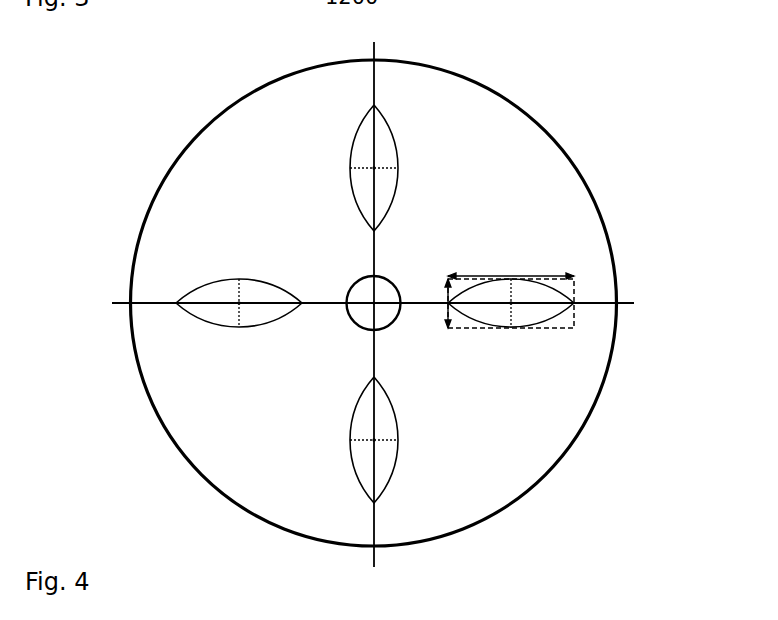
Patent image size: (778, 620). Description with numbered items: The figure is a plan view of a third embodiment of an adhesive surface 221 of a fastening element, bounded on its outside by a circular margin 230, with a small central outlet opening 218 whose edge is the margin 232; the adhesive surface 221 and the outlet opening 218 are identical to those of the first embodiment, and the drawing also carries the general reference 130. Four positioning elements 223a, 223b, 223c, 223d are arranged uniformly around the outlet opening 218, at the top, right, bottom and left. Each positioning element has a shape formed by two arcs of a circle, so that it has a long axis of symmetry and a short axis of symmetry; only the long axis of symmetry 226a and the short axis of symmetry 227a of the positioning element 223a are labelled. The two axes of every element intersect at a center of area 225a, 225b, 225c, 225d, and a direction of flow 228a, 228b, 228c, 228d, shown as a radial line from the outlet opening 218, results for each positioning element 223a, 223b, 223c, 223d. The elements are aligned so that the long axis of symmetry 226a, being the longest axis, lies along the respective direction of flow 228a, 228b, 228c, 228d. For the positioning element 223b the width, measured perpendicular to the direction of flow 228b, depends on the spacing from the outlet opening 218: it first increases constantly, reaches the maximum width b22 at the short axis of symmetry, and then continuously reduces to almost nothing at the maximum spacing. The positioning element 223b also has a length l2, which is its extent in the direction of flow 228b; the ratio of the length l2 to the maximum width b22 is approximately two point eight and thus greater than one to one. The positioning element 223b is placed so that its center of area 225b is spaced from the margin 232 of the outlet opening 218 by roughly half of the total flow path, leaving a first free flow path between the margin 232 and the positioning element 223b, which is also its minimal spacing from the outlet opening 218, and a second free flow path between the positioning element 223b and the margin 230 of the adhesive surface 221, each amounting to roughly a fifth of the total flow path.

The optical device 130 is at (557, 73).
The outlet opening 218 is at (363, 320).
The adhesive surface 221 is at (222, 171).
The positioning element 223a is at (365, 128).
The positioning element 223b is at (547, 308).
The positioning element 223c is at (386, 465).
The positioning element 223d is at (205, 310).
The center of area 225a is at (375, 167).
The center of area 225b is at (511, 303).
The center of area 225c is at (374, 440).
The center of area 225d is at (239, 303).
The long axis of symmetry 226a is at (372, 155).
The short axis of symmetry 227a is at (374, 168).
The direction of flow 228a is at (374, 45).
The direction of flow 228b is at (634, 302).
The direction of flow 228c is at (367, 552).
The direction of flow 228d is at (112, 303).
The margin of the adhesive surface 230 is at (588, 429).
The margin of the outlet opening 232 is at (346, 288).
The maximum width b22 is at (448, 303).
The length l2 is at (511, 290).